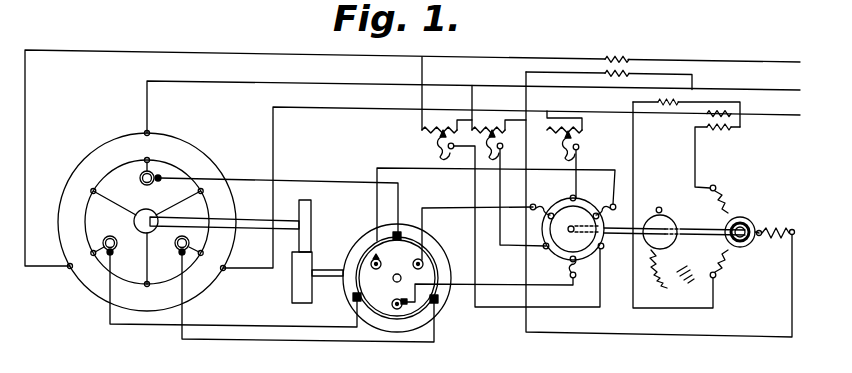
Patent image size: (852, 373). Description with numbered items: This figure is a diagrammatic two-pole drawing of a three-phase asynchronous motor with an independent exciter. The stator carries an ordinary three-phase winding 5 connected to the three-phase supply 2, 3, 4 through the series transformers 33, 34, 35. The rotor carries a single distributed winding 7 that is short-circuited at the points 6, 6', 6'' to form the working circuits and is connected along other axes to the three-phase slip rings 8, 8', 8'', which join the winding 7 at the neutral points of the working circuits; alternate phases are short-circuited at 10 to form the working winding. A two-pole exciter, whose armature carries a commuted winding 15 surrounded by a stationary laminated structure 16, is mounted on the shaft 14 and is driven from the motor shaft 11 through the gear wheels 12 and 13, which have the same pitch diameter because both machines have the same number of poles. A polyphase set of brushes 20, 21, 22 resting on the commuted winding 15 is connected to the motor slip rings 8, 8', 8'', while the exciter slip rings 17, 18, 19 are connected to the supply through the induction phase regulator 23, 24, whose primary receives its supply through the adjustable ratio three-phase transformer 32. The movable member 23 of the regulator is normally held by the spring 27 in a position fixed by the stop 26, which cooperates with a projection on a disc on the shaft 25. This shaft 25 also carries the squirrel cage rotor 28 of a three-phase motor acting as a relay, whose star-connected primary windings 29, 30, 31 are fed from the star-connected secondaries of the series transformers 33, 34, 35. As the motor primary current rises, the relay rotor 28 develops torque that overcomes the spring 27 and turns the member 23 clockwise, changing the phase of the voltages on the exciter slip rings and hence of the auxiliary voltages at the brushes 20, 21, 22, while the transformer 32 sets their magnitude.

The three-phase supply line 2 is at (419, 158).
The three-phase supply line 3 is at (480, 107).
The three-phase supply line 4 is at (517, 187).
The three-phase winding 5 is at (128, 131).
The short-circuited point 6 is at (180, 207).
The short-circuited point 6' is at (108, 213).
The short-circuited point 6'' is at (147, 271).
The distributed winding 7 is at (107, 173).
The slip ring 8 is at (262, 197).
The slip ring 8' is at (224, 272).
The slip ring 8'' is at (295, 288).
The short-circuit 10 is at (147, 210).
The shaft 11 is at (253, 201).
The gear wheel 12 is at (311, 206).
The gear wheel 13 is at (292, 289).
The shaft 14 is at (319, 273).
The commuted winding 15 is at (430, 262).
The stationary laminated structure 16 is at (404, 328).
The slip ring 17 is at (465, 238).
The slip ring 18 is at (488, 229).
The slip ring 19 is at (375, 345).
The brush 20 is at (355, 300).
The brush 21 is at (400, 228).
The brush 22 is at (440, 304).
The movable member of induction regulator 23 is at (567, 247).
The induction phase regulator 24 is at (562, 198).
The shaft 25 is at (608, 251).
The stop 26 is at (660, 207).
The spring 27 is at (661, 265).
The squirrel cage rotor 28 is at (748, 248).
The primary winding 29 is at (715, 279).
The primary winding 30 is at (729, 196).
The primary winding 31 is at (779, 222).
The adjustable ratio three-phase transformer 32 is at (434, 134).
The series transformer 33 is at (717, 149).
The series transformer 34 is at (673, 108).
The series transformer 35 is at (622, 58).